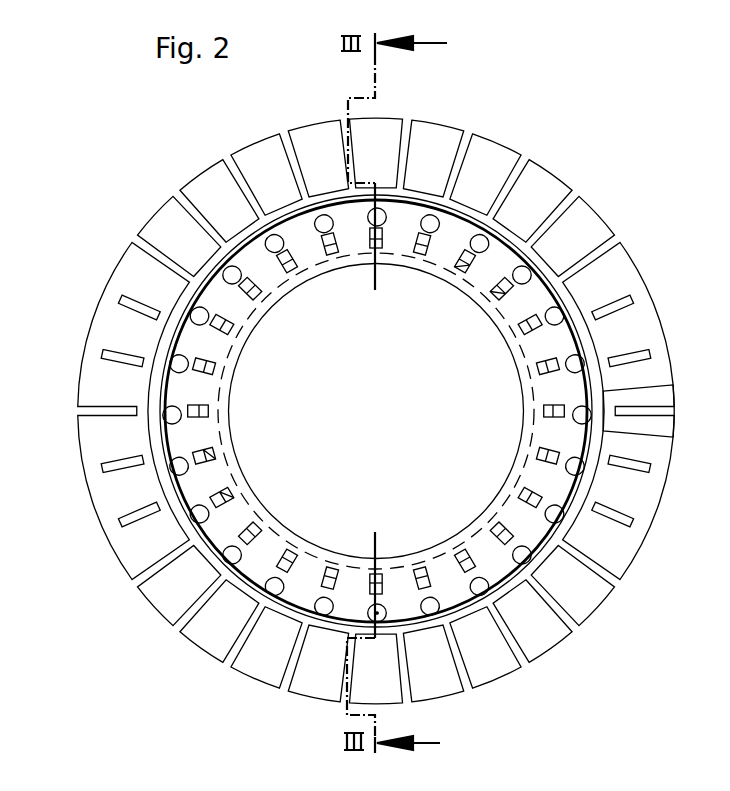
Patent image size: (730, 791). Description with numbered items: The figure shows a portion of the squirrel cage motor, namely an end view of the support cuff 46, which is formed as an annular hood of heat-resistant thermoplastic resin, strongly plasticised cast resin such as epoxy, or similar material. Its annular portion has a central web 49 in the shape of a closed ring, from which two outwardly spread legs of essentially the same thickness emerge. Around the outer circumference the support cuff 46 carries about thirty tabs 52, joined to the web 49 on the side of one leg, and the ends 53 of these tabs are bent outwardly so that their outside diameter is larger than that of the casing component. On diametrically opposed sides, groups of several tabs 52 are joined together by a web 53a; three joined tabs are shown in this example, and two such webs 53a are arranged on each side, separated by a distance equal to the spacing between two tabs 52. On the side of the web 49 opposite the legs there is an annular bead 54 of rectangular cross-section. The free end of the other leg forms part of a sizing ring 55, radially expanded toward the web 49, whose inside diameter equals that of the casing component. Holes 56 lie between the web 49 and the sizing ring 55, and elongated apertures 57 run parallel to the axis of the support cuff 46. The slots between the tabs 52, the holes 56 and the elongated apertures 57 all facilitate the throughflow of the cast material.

The support cuff 46 is at (630, 212).
The central web 49 is at (297, 598).
The tabs 52 is at (168, 227).
The ends of the tabs 53 is at (205, 165).
The web joining tabs 53a is at (103, 322).
The annular bead 54 is at (413, 192).
The sizing ring 55 is at (430, 548).
The holes 56 is at (182, 353).
The elongated apertures 57 is at (500, 290).